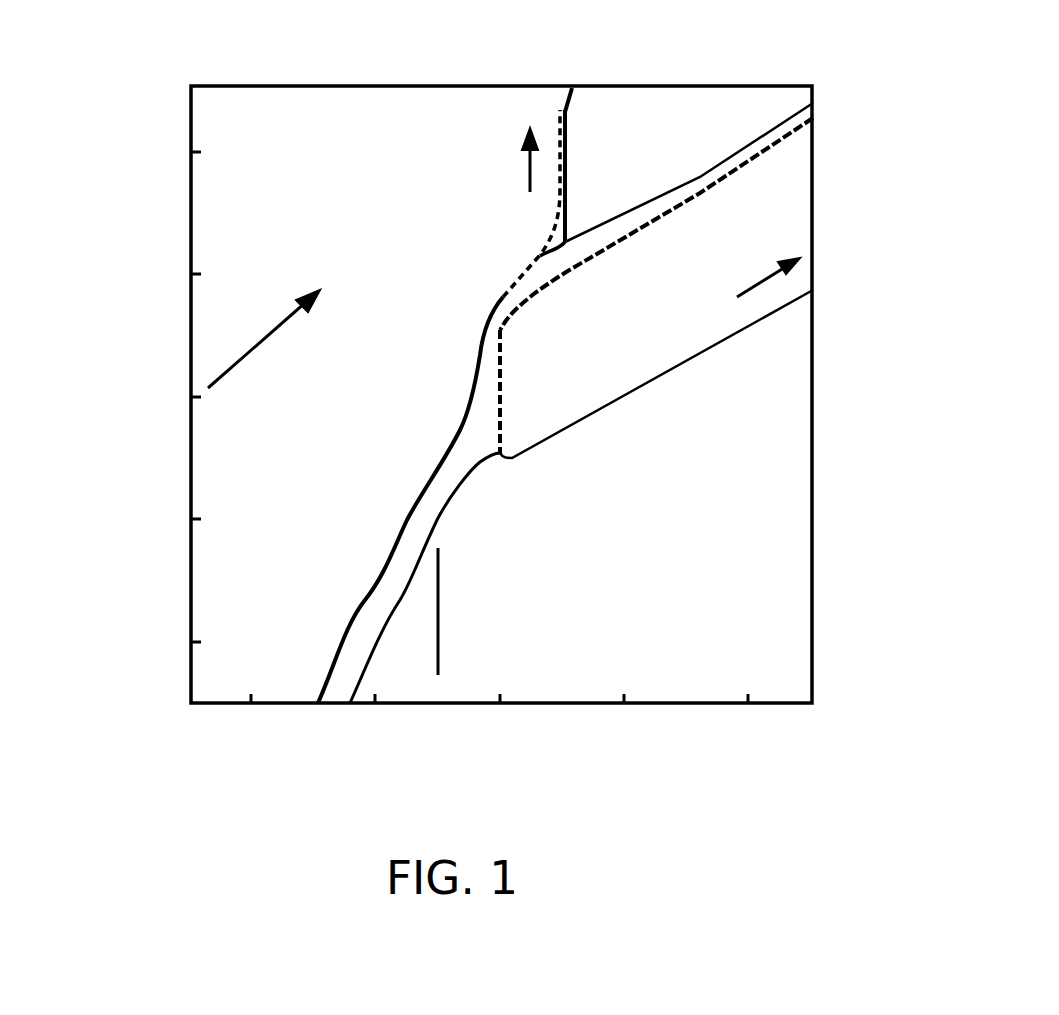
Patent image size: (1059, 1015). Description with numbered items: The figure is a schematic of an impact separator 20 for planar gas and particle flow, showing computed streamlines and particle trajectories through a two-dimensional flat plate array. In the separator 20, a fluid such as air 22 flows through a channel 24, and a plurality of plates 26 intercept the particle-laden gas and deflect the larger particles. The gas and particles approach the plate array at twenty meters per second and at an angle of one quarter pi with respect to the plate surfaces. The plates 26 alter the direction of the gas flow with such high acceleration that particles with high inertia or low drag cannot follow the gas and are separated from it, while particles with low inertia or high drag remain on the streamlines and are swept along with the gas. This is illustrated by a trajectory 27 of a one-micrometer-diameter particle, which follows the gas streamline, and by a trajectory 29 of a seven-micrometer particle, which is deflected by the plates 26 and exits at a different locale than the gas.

The separator 20 is at (793, 564).
The air 22 is at (298, 371).
The channel 24 is at (298, 563).
The plates 26 is at (500, 388).
The trajectory 27 is at (815, 104).
The trajectory 29 is at (572, 88).